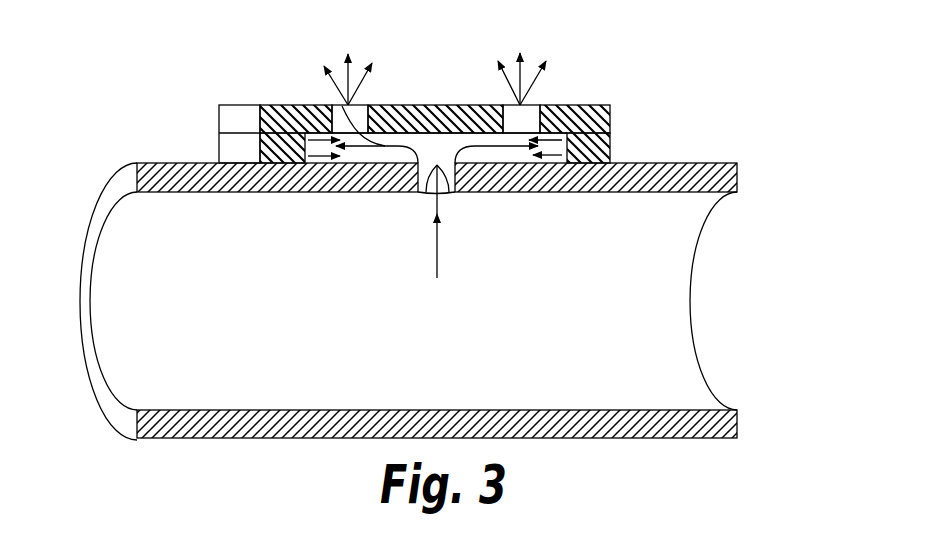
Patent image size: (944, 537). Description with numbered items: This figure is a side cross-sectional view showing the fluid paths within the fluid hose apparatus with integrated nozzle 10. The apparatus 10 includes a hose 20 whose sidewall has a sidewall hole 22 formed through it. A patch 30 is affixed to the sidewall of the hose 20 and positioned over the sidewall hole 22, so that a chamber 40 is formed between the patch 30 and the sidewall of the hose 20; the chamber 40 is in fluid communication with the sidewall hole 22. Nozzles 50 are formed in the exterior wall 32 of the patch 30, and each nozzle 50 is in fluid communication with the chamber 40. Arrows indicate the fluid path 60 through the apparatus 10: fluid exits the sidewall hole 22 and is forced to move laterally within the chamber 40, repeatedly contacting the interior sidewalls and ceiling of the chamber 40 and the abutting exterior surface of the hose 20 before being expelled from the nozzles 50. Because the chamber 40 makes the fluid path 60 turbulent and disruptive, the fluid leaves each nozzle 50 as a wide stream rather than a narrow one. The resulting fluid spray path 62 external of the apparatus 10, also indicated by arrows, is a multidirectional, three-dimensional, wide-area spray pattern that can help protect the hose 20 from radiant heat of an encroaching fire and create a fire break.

The fluid hose apparatus with integrated nozzle 10 is at (705, 96).
The hose 20 is at (148, 330).
The sidewall hole 22 is at (423, 190).
The patch 30 is at (612, 145).
The exterior wall 32 is at (611, 108).
The chamber 40 is at (418, 144).
The nozzle 50 is at (340, 104).
The fluid path 60 is at (520, 105).
The fluid spray path 62 is at (534, 60).